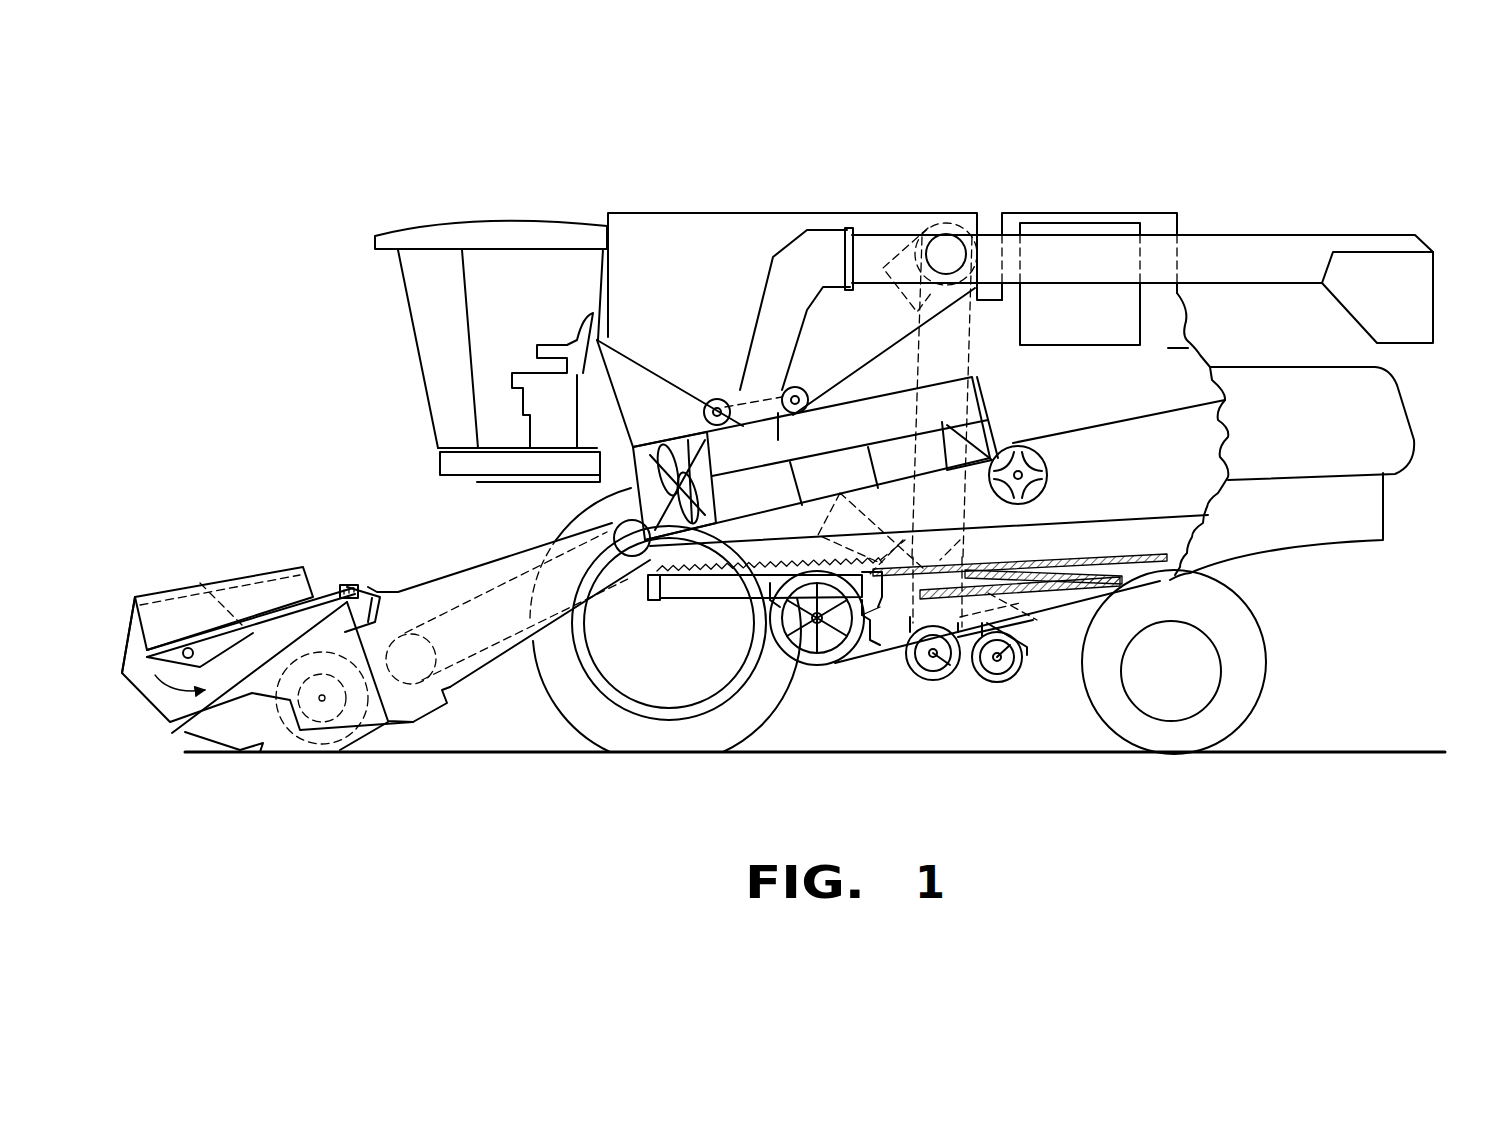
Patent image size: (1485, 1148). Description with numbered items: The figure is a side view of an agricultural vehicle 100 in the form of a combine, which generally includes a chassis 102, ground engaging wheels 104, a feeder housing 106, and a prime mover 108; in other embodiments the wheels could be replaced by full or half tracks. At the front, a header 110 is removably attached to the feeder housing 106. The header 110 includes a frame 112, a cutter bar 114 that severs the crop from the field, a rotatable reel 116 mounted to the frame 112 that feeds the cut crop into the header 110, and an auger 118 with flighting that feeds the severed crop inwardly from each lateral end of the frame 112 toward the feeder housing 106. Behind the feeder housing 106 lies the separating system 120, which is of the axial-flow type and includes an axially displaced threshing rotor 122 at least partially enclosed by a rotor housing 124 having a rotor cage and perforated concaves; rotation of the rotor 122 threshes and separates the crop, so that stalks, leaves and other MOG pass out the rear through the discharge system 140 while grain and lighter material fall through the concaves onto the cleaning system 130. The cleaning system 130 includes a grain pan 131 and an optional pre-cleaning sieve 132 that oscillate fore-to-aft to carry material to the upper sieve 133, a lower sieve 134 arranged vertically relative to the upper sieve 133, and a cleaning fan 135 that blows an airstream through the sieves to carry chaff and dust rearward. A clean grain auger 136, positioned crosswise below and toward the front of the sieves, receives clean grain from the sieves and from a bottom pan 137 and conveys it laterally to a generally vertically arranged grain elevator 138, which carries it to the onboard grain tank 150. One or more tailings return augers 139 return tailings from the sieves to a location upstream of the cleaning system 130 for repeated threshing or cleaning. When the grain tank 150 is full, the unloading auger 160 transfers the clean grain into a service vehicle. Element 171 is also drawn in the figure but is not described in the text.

The agricultural vehicle 100 is at (481, 200).
The chassis 102 is at (1200, 573).
The ground engaging wheels 104 is at (422, 343).
The feeder housing 106 is at (437, 575).
The prime mover 108 is at (1075, 225).
The header 110 is at (230, 562).
The frame 112 is at (378, 733).
The cutter bar 114 is at (182, 742).
The rotatable reel 116 is at (122, 643).
The auger 118 is at (322, 722).
The separating system 120 is at (566, 503).
The threshing rotor 122 is at (665, 455).
The rotor housing 124 is at (858, 420).
The cleaning system 130 is at (891, 674).
The grain pan 131 is at (655, 602).
The pre-cleaning sieve 132 is at (975, 560).
The upper sieve 133 is at (1090, 570).
The lower sieve 134 is at (1050, 592).
The cleaning fan 135 is at (822, 650).
The clean grain auger 136 is at (932, 667).
The bottom pan 137 is at (1088, 597).
The grain elevator 138 is at (970, 347).
The tailings return auger 139 is at (890, 540).
The discharge system 140 is at (1348, 562).
The onboard grain tank 150 is at (665, 232).
The unloading auger 160 is at (1262, 243).
The engine compartment 171 is at (1385, 395).